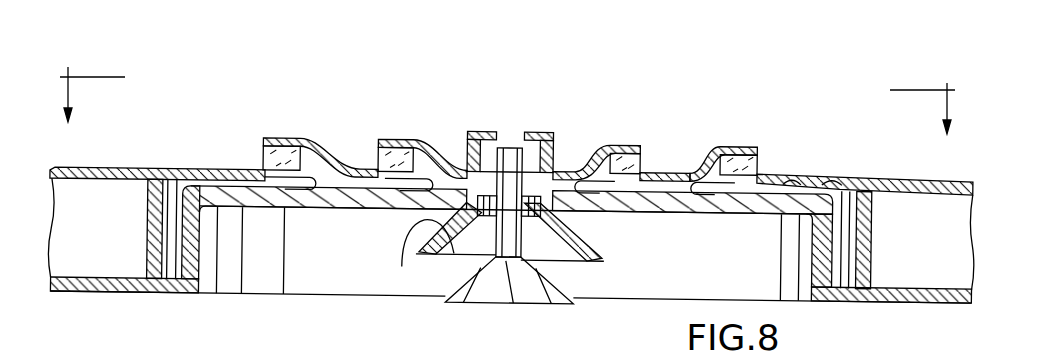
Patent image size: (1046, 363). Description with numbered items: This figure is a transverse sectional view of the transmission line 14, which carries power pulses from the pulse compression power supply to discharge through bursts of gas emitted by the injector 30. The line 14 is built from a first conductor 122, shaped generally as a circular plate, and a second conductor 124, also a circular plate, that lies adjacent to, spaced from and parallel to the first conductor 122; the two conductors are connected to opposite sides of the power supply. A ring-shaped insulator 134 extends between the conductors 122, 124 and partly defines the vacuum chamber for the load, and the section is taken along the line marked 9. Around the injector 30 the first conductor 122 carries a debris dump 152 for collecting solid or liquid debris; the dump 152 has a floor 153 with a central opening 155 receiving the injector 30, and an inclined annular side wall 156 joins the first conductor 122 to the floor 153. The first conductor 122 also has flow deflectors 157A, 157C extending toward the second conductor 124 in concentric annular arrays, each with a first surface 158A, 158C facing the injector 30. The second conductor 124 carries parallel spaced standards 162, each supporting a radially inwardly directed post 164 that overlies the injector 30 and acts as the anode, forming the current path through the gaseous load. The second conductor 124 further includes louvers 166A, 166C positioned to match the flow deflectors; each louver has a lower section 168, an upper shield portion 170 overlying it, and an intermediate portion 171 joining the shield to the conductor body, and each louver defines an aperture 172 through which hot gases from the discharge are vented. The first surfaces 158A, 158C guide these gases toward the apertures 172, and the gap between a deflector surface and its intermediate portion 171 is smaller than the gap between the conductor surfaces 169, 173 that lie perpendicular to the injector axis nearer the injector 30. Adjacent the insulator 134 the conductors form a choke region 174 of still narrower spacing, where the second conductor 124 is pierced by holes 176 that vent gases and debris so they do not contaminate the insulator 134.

The section line of FIG. 9 is at (507, 113).
The transmission line 14 is at (546, 92).
The injector 30 is at (505, 269).
The first conductor 122 is at (357, 208).
The second conductor 124 is at (673, 164).
The ring-shaped insulator 134 is at (148, 234).
The debris dump 152 is at (595, 238).
The floor 153 is at (568, 285).
The central opening 155 is at (470, 277).
The inclined annular side wall 156 is at (448, 246).
The flow deflector 157A is at (383, 204).
The flow deflector 157C is at (290, 187).
The first surface 158A is at (405, 213).
The first surface 158C is at (322, 187).
The standard 162 is at (462, 141).
The post 164 is at (482, 126).
The louver 166A is at (620, 139).
The louver 166C is at (740, 139).
The lower section 168 is at (262, 167).
The first conductor surface 169 is at (608, 201).
The upper shield portion 170 is at (275, 137).
The intermediate portion 171 is at (318, 139).
The aperture 172 is at (378, 138).
The second conductor surface 173 is at (575, 171).
The choke region 174 is at (217, 171).
The holes 176 is at (795, 174).